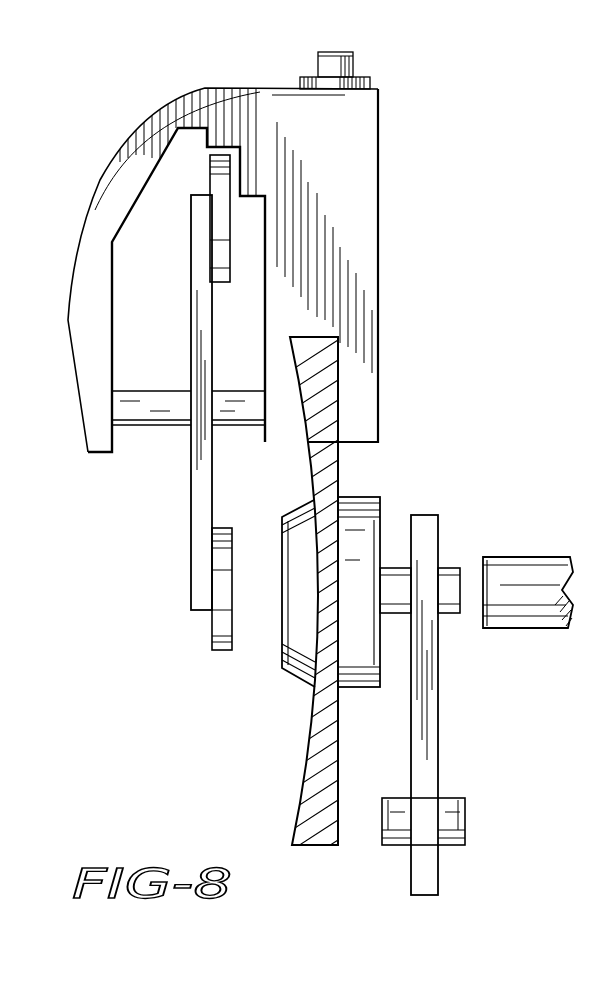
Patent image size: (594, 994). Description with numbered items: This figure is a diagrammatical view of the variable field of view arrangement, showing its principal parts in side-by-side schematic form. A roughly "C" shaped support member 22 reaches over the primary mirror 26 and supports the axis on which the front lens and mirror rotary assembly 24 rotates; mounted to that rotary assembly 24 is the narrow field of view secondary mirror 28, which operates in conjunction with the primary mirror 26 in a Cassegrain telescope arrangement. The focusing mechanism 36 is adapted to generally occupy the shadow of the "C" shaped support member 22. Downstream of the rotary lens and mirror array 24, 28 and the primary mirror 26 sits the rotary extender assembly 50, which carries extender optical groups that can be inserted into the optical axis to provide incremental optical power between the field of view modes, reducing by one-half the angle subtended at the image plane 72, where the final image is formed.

The "C" shaped support member 22 is at (352, 250).
The front lens and mirror rotary assembly 24 is at (200, 338).
The primary mirror 26 is at (302, 812).
The narrow field of view secondary mirror 28 is at (212, 638).
The focusing mechanism 36 is at (385, 525).
The rotary extender assembly 50 is at (432, 758).
The image plane 72 is at (483, 580).